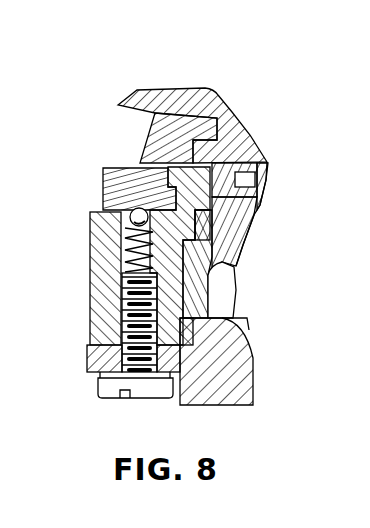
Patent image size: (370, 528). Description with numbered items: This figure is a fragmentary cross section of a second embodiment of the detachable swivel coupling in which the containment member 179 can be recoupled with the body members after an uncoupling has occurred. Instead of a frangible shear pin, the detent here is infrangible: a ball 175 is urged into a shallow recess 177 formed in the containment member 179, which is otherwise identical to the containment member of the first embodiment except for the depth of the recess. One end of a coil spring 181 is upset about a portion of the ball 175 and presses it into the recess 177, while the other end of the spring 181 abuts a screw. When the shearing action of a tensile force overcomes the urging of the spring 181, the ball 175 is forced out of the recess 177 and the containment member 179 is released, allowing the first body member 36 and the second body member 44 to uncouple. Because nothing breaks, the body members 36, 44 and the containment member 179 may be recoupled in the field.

The first body member 36 is at (162, 84).
The containment member 179 is at (138, 158).
The shallow recess 177 is at (103, 185).
The ball 175 is at (93, 213).
The coil spring 181 is at (130, 262).
The second body member 44 is at (90, 310).